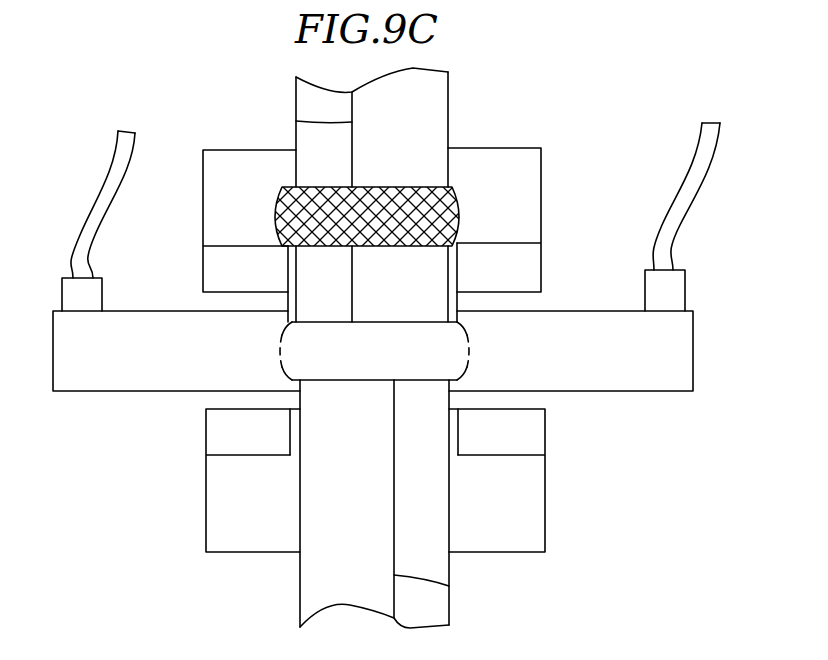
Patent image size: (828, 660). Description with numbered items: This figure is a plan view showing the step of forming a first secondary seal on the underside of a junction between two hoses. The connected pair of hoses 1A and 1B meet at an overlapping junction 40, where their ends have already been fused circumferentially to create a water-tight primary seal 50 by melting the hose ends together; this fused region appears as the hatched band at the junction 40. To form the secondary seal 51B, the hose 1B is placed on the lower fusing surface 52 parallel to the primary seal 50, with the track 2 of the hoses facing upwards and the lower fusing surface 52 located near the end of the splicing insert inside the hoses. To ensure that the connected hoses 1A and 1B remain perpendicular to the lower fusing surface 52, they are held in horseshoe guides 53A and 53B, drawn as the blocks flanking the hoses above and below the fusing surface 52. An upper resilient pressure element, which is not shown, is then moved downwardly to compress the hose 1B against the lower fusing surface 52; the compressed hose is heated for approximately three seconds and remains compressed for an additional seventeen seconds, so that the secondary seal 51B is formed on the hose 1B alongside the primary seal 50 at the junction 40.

The hose 1A is at (479, 107).
The hose 1B is at (268, 587).
The track 2 is at (296, 121).
The overlapping junction 40 is at (252, 353).
The primary seal 50 is at (452, 216).
The secondary seal 51B is at (420, 348).
The lower fusing surface 52 is at (658, 390).
The horseshoe guide 53A is at (541, 177).
The horseshoe guide 53B is at (545, 508).